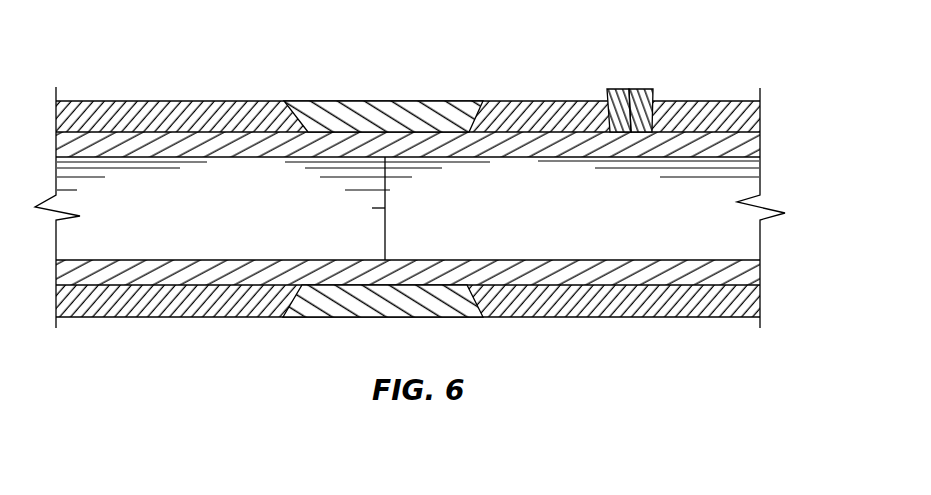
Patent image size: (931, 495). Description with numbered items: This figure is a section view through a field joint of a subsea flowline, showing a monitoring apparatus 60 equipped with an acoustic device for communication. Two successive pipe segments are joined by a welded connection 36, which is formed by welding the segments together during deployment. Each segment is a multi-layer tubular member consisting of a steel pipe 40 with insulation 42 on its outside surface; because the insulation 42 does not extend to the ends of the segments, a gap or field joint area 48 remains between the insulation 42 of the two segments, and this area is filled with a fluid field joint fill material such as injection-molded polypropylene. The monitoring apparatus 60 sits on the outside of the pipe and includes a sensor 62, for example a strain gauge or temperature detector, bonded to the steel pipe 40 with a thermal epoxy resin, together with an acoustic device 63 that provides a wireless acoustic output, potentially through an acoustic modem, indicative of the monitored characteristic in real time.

The welded connection 36 is at (385, 240).
The steel pipe 40 is at (747, 145).
The insulation 42 is at (190, 101).
The field joint area 48 is at (398, 101).
The monitoring apparatus 60 is at (630, 69).
The sensor 62 is at (607, 92).
The acoustic device 63 is at (653, 92).